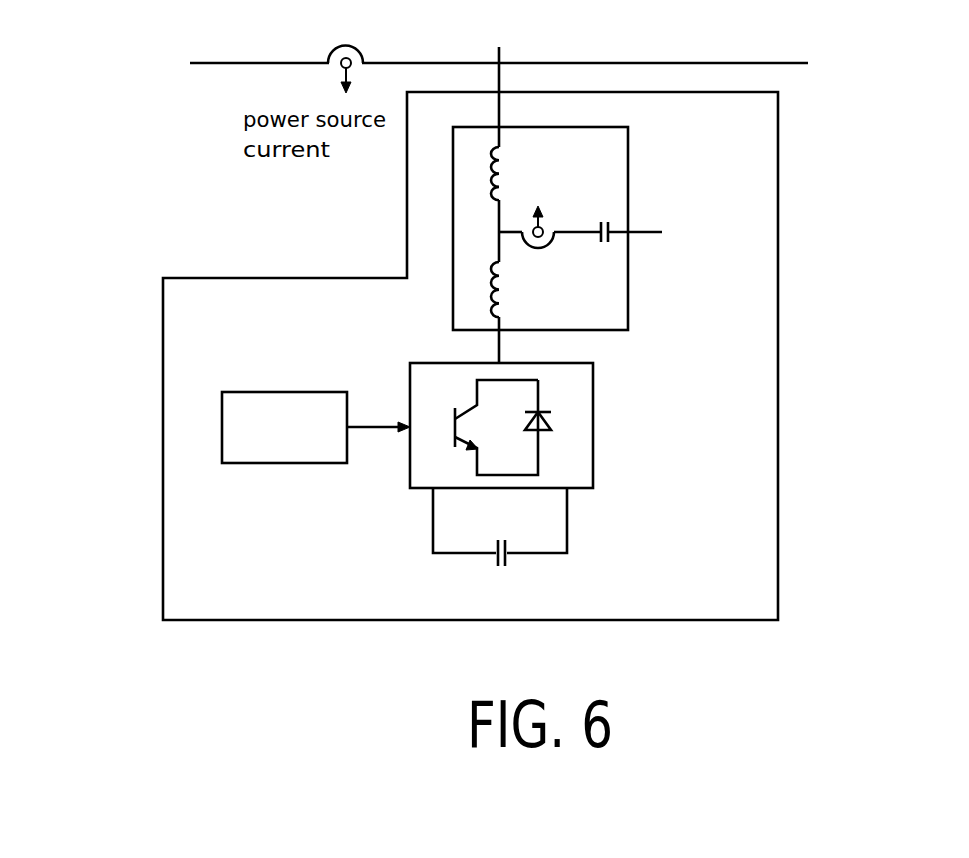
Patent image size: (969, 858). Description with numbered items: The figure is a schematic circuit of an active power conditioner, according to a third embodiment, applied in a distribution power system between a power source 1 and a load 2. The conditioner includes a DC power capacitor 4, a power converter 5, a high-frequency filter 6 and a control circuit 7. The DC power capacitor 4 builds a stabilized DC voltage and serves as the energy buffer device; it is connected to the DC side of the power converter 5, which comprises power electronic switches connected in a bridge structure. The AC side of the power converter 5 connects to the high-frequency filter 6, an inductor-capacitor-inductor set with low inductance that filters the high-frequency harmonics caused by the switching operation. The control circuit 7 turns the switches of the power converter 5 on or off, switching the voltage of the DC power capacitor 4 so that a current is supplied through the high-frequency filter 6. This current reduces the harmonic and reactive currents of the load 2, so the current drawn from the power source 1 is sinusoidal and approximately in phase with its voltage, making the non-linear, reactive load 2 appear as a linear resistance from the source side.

The power source 1 is at (112, 72).
The load 2 is at (837, 67).
The DC power capacitor 4 is at (510, 562).
The power converter 5 is at (593, 446).
The high-frequency filter 6 is at (628, 299).
The control circuit 7 is at (222, 432).